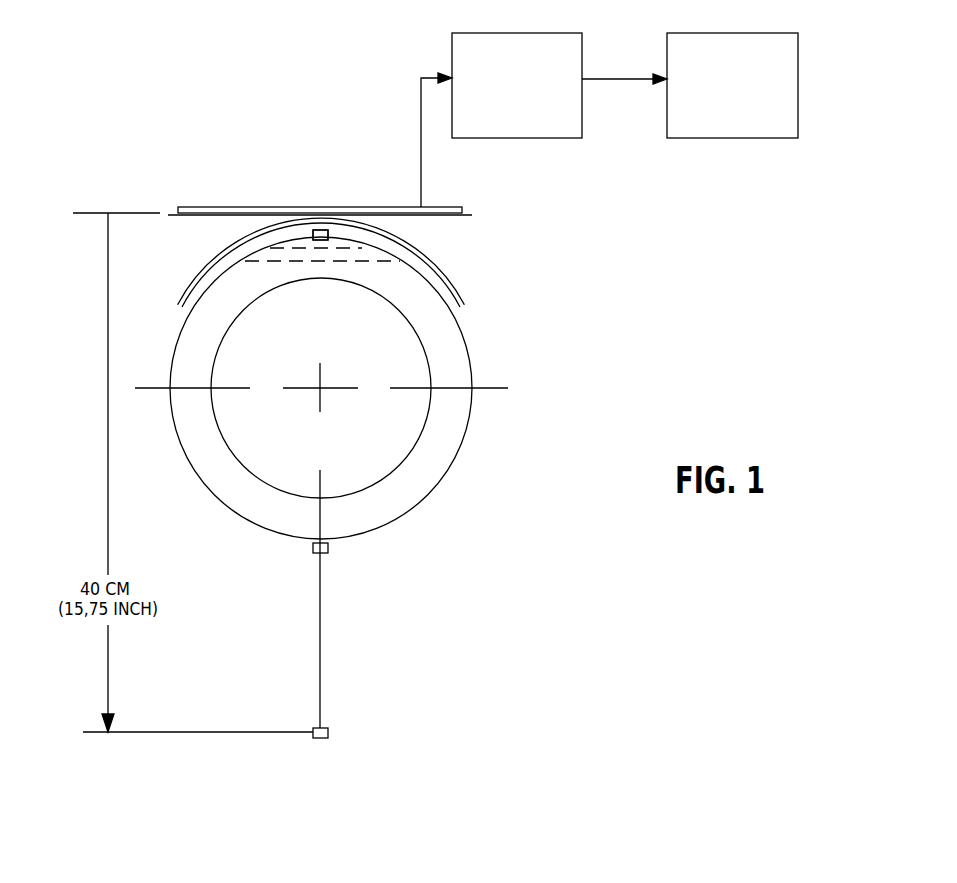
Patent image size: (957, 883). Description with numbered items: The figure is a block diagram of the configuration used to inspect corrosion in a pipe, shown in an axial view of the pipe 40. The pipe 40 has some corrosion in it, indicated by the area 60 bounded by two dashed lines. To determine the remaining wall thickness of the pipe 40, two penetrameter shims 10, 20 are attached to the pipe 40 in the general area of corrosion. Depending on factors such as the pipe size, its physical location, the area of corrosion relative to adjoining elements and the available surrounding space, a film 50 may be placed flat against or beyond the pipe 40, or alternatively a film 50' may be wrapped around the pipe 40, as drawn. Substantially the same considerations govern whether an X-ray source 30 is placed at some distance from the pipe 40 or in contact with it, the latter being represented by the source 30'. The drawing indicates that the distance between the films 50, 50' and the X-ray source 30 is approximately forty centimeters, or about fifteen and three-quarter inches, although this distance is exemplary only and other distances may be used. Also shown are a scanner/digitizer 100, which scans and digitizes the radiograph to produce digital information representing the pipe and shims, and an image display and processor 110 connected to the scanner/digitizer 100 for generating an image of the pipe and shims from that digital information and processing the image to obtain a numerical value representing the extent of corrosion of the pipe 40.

The scanner/digitizer 100 is at (480, 33).
The image display and processor 110 is at (710, 33).
The film 50 is at (255, 167).
The wrapped film 50' is at (247, 262).
The pipe 40 is at (467, 342).
The penetrameter shim 10 is at (302, 214).
The penetrameter shim 20 is at (320, 235).
The area of corrosion 60 is at (373, 255).
The X-ray source 30 is at (431, 753).
The X-ray source in contact with pipe 30' is at (461, 593).